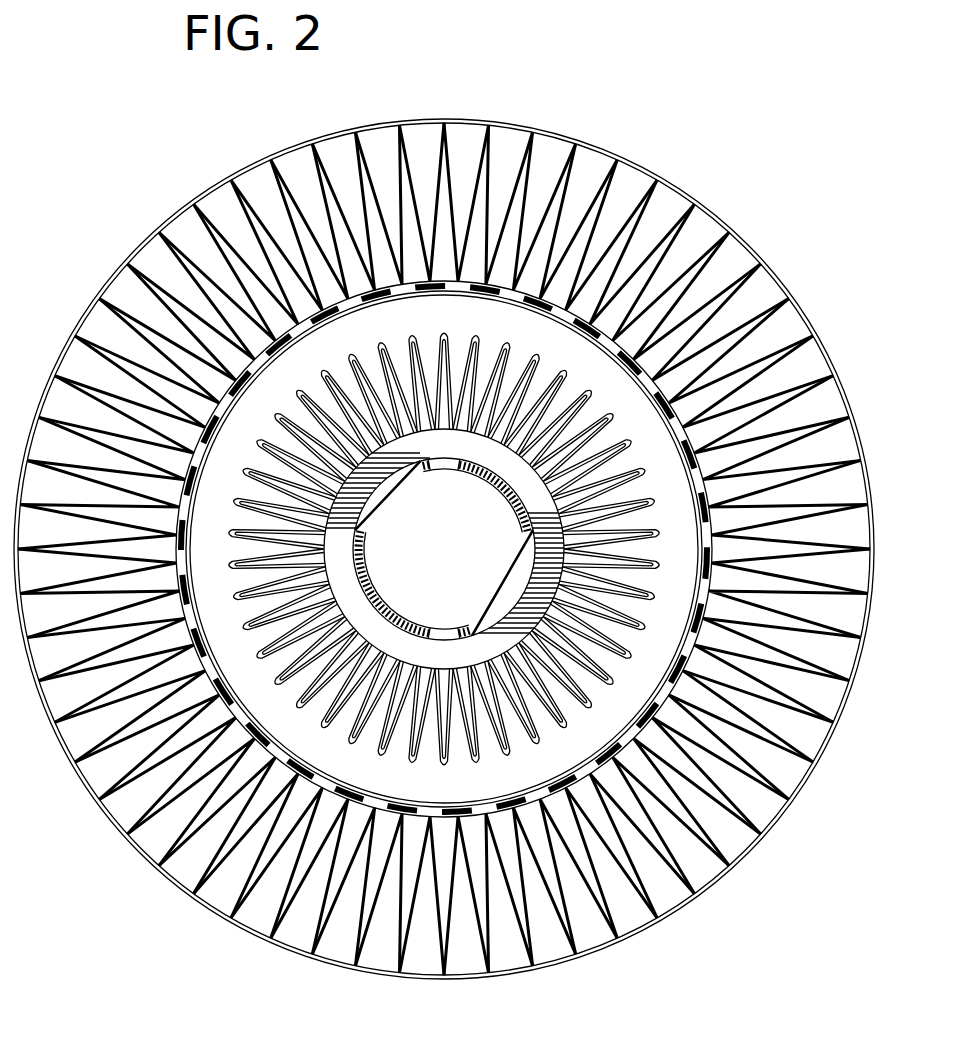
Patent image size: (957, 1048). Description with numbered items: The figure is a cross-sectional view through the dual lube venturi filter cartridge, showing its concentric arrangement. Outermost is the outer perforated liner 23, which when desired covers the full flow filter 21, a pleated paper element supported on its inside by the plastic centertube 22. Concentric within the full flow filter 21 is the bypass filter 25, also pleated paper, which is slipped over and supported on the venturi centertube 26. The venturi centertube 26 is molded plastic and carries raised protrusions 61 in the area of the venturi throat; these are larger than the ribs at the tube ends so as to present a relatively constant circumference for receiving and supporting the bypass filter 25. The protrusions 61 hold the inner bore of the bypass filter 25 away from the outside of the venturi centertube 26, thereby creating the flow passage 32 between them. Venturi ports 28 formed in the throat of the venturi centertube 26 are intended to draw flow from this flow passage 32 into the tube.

The full flow filter 21 is at (827, 457).
The plastic centertube 22 is at (575, 307).
The outer perforated liner 23 is at (510, 125).
The bypass filter 25 is at (632, 500).
The venturi centertube 26 is at (490, 627).
The venturi ports 28 is at (433, 460).
The flow passage 32 is at (277, 377).
The protrusions 61 is at (460, 650).